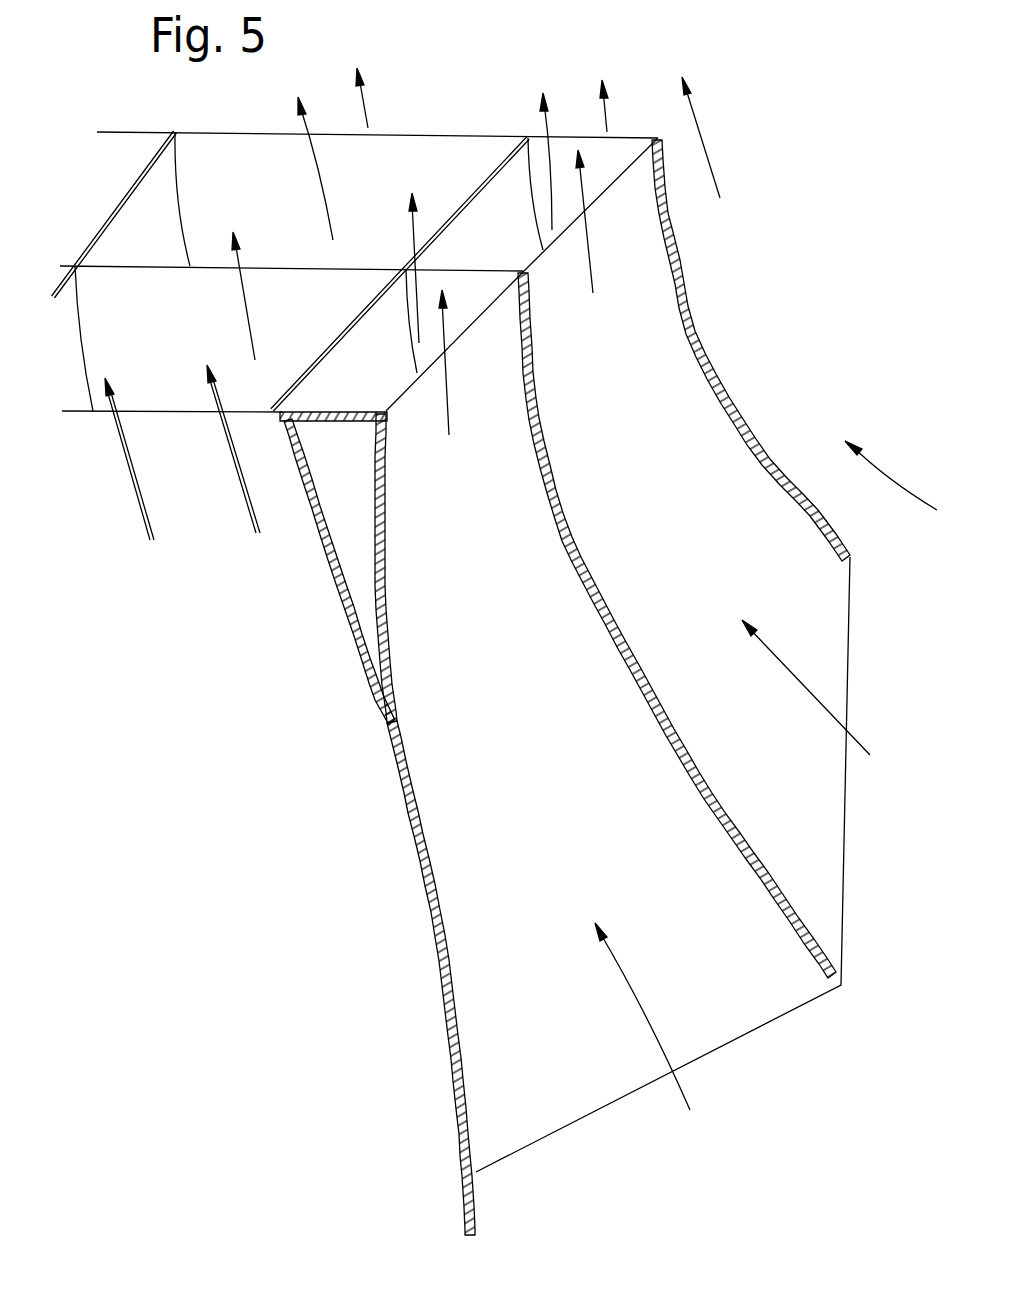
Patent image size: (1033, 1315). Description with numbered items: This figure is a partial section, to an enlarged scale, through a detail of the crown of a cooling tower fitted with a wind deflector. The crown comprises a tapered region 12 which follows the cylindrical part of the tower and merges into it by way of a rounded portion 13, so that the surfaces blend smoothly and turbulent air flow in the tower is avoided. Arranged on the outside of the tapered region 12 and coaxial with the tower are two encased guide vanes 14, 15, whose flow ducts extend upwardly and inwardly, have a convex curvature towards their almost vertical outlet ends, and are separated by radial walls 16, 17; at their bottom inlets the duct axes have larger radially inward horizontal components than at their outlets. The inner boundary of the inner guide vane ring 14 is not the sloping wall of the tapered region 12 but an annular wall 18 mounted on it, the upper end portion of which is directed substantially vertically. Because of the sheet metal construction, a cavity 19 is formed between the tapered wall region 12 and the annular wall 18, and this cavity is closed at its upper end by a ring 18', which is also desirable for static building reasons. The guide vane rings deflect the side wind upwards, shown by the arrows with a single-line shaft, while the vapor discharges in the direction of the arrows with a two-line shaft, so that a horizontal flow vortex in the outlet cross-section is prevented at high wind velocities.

The tapered region 12 is at (323, 540).
The rounded portion 13 is at (435, 932).
The inner guide vane ring 14 is at (572, 530).
The outer guide vane ring 15 is at (708, 362).
The radial wall 16 is at (545, 767).
The radial wall 17 is at (715, 580).
The annular wall 18 is at (411, 568).
The ring 18' is at (333, 384).
The cavity 19 is at (365, 573).